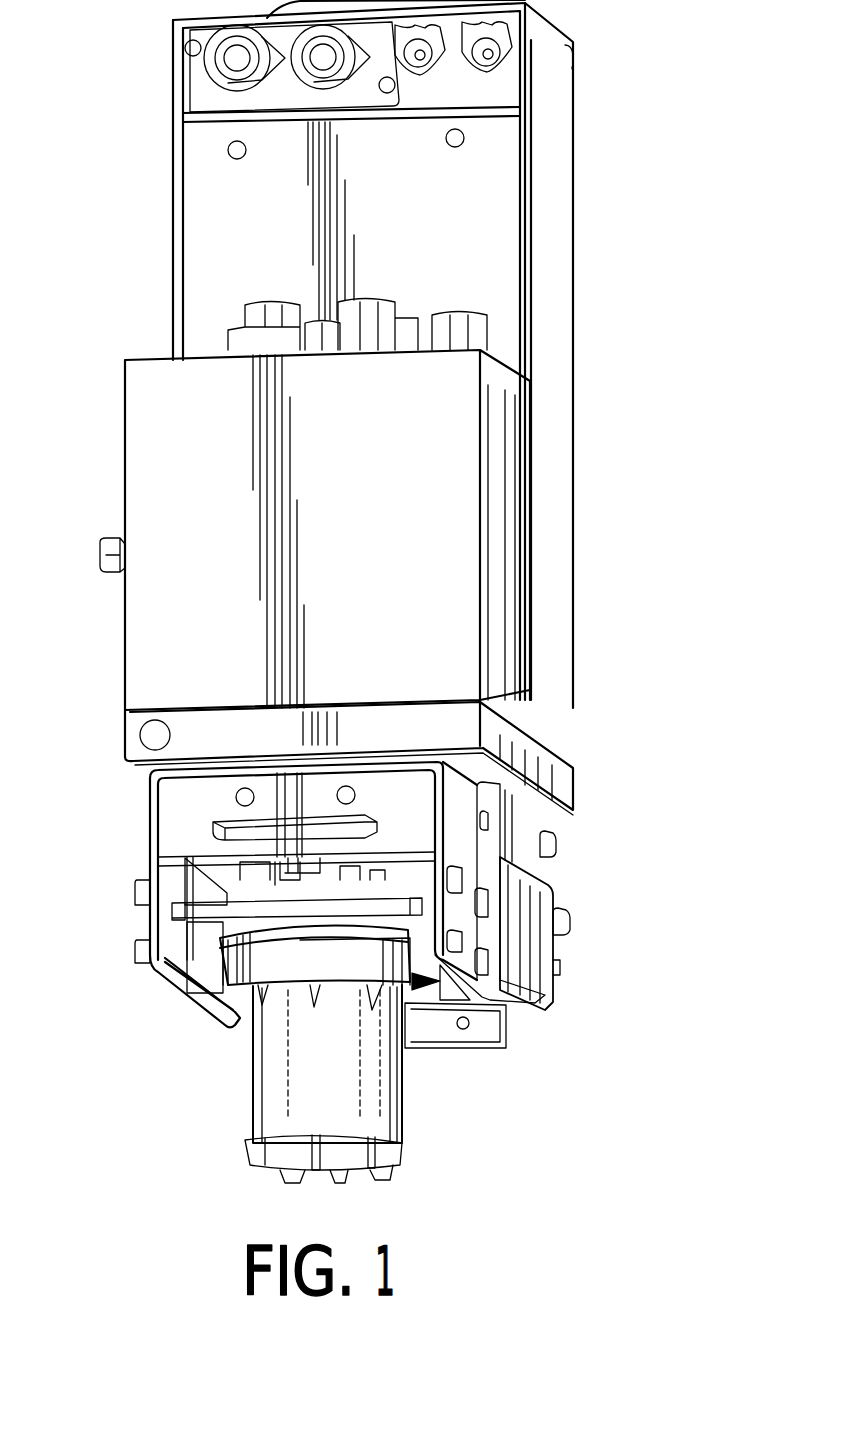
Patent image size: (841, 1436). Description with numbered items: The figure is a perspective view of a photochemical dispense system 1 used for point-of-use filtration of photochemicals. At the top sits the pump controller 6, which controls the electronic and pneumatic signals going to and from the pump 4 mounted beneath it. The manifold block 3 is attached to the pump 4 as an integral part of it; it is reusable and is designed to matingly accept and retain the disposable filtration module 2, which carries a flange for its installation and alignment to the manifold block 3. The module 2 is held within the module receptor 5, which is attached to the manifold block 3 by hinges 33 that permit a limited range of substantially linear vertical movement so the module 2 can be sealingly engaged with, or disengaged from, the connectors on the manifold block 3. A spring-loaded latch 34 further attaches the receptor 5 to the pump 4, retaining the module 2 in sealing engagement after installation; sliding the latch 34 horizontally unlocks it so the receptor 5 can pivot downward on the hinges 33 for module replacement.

The photochemical dispense system 1 is at (697, 443).
The disposable filtration module 2 is at (400, 1092).
The manifold block 3 is at (573, 790).
The pump 4 is at (125, 403).
The module receptor 5 is at (145, 847).
The pump controller 6 is at (573, 170).
The hinges 33 is at (560, 930).
The spring-loaded latch 34 is at (230, 822).